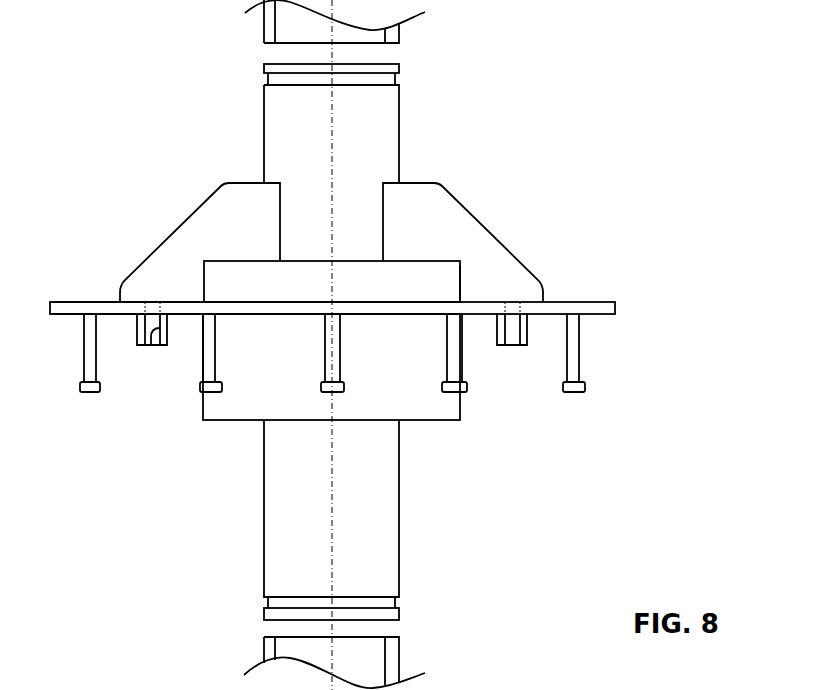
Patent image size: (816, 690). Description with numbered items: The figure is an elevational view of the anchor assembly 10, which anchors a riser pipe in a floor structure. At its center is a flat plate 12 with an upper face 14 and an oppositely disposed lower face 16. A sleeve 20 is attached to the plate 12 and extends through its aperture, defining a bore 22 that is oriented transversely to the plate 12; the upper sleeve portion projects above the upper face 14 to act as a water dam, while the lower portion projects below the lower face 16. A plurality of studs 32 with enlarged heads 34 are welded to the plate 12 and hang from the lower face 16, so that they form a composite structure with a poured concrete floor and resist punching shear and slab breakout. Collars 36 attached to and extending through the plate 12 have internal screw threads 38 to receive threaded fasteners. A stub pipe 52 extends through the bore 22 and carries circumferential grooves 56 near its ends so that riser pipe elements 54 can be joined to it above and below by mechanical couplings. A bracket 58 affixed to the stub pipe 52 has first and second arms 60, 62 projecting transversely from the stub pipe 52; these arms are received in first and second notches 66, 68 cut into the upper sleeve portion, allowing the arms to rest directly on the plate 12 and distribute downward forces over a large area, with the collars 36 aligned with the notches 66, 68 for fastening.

The anchor assembly 10 is at (608, 42).
The plate 12 is at (615, 305).
The upper face 14 is at (66, 302).
The lower face 16 is at (55, 316).
The sleeve 20 is at (440, 402).
The bore 22 is at (428, 420).
The studs 32 is at (90, 350).
The enlarged heads 34 is at (90, 395).
The collars 36 is at (163, 347).
The internal screw threads 38 is at (150, 346).
The stub pipe 52 is at (388, 119).
The riser pipe elements 54 is at (399, 33).
The circumferential grooves 56 is at (267, 80).
The bracket 58 is at (487, 209).
The first arm 60 is at (182, 218).
The second arm 62 is at (482, 240).
The first notch 66 is at (203, 282).
The second notch 68 is at (461, 285).